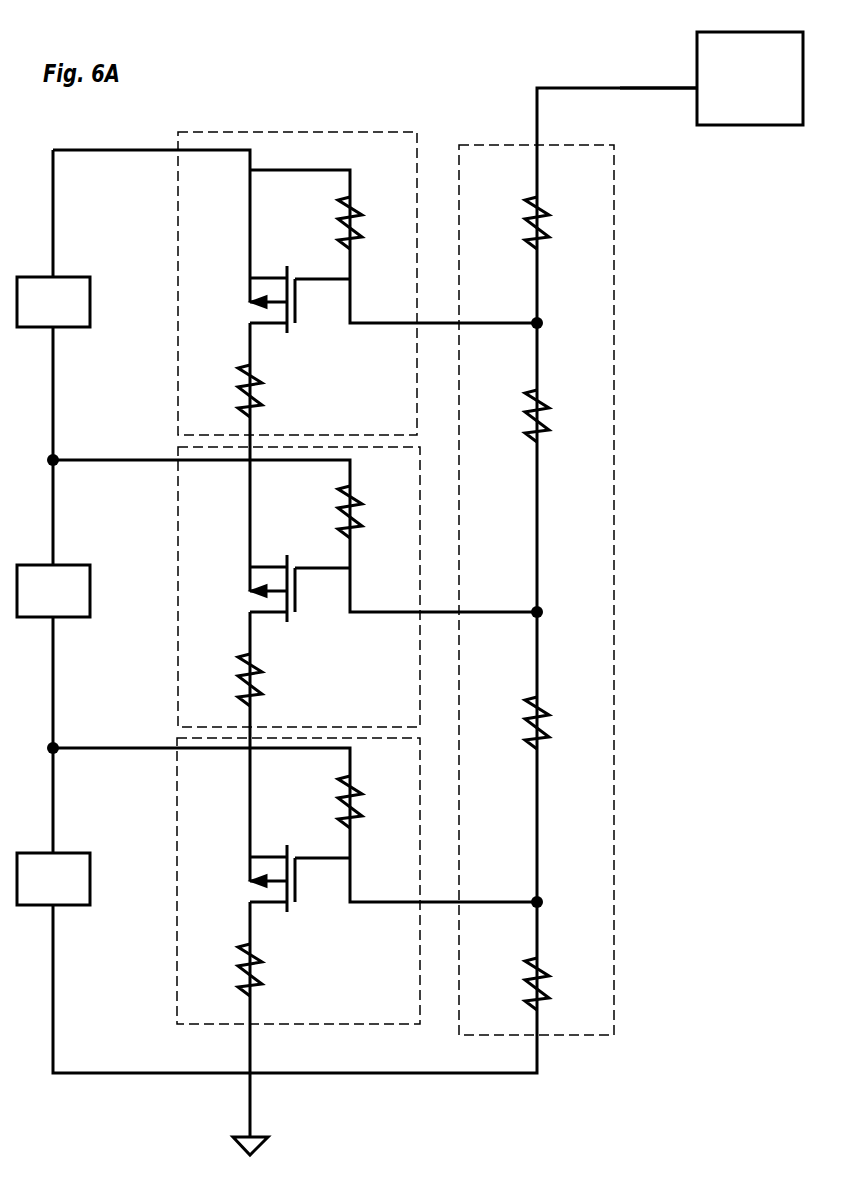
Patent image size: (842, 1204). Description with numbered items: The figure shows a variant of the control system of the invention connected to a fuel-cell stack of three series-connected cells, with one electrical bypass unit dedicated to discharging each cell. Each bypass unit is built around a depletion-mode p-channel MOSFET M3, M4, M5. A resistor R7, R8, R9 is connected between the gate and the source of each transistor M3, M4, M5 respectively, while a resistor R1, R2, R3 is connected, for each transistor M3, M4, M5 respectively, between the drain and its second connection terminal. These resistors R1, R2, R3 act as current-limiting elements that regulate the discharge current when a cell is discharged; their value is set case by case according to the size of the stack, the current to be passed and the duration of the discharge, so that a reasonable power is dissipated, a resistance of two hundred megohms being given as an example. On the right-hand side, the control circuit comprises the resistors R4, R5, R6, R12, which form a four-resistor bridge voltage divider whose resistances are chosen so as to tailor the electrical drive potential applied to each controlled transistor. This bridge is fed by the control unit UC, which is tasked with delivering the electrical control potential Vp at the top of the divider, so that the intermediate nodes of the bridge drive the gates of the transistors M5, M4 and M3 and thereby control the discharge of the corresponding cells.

The control unit UC is at (750, 78).
The electrical control potential Vp is at (658, 75).
The depletion-mode p-channel MOSFET M3 is at (280, 878).
The depletion-mode p-channel MOSFET M4 is at (280, 588).
The depletion-mode p-channel MOSFET M5 is at (278, 299).
The resistor R1 is at (265, 970).
The resistor R2 is at (269, 680).
The resistor R3 is at (267, 391).
The resistor R4 is at (553, 984).
The resistor R5 is at (555, 723).
The resistor R6 is at (554, 416).
The resistor R7 is at (365, 802).
The resistor R8 is at (365, 512).
The resistor R9 is at (364, 223).
The resistor R12 is at (563, 223).